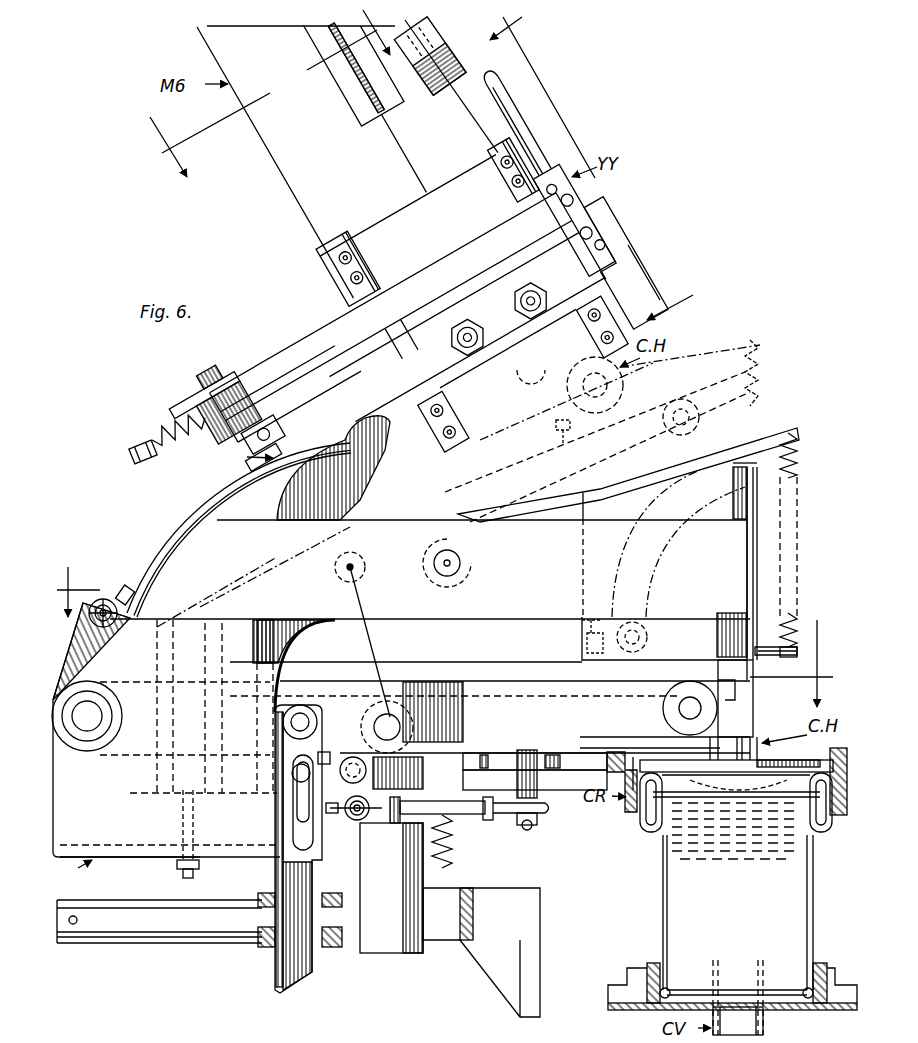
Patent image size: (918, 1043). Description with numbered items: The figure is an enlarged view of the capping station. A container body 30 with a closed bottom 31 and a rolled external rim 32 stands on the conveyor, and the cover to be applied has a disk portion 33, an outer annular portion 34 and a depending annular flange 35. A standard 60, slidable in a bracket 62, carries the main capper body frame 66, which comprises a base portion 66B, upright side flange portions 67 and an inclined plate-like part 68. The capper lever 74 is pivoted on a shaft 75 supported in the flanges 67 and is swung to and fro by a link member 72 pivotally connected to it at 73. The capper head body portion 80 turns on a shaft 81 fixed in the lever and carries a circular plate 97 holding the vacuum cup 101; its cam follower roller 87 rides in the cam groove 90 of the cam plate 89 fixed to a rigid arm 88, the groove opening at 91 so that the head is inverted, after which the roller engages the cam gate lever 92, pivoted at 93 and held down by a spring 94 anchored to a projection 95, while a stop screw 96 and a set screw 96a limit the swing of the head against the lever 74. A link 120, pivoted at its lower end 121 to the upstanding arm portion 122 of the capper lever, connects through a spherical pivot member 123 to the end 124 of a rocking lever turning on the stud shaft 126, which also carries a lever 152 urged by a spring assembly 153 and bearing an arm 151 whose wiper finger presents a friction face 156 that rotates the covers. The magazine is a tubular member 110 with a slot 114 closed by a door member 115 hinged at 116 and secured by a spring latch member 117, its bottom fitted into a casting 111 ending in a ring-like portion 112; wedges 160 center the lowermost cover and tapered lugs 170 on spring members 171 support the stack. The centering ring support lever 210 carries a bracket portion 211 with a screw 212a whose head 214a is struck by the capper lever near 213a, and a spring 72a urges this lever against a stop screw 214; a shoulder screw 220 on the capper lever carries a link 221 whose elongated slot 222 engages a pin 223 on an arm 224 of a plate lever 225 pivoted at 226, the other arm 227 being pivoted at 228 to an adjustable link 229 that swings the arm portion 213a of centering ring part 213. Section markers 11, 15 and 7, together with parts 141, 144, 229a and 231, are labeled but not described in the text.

The tubular member 110 is at (300, 207).
The hinge 116 is at (367, 103).
The door member 115 is at (430, 132).
The spring latch member 117 is at (466, 70).
The section line 15- 15 is at (596, 164).
The section line 11- 11 is at (279, 106).
The inner face portion 156 is at (507, 117).
The slot 114 is at (488, 137).
The casting 111 is at (326, 272).
The spring member 171 is at (517, 199).
The lever 152 is at (460, 289).
The bar 141 is at (464, 320).
The nuts 144 is at (514, 325).
The tapered lugs 170 is at (592, 345).
The arm 151 is at (557, 220).
The ring-like portion 112 is at (622, 277).
The wedges 160 is at (525, 368).
The stop screw 96 is at (549, 437).
The set screw 96a is at (717, 354).
The stud shaft 126 is at (200, 383).
The lever end 124 is at (263, 423).
The spherical pivot member 123 is at (230, 468).
The spring assembly 153 is at (152, 440).
The inclined plate-like part 68 is at (340, 433).
The link 120 is at (182, 515).
The cam gate lever 92 is at (627, 480).
The groove opening 91 is at (733, 462).
The cam plate 89 is at (758, 494).
The spring 94 is at (795, 611).
The projection 95 is at (765, 645).
The rigid arm 88 is at (556, 552).
The cam groove 90 is at (657, 543).
The pivot 93 is at (461, 564).
The cam follower roller 87 is at (647, 623).
The screw 212a is at (262, 585).
The screw head 214a is at (289, 625).
The bracket portion 211 is at (228, 600).
The section line 7- 7 is at (449, 624).
The lower end pivot 121 is at (106, 600).
The upstanding arm portion 122 is at (82, 650).
The shaft 75 is at (87, 720).
The upright side flange portions 67 is at (134, 822).
The main capper body frame 66 is at (73, 874).
The base portion 66B is at (136, 858).
The stop screw 214 is at (184, 817).
The standard 60 is at (275, 965).
The elongated slot 222 is at (280, 850).
The shoulder screw 220 is at (305, 705).
The pin 223 is at (292, 773).
The plate lever 225 is at (318, 812).
The link 221 is at (336, 815).
The arm 227 is at (365, 822).
The pivot 228 is at (405, 870).
The adjustable link 229 is at (486, 820).
The nut 229a is at (530, 826).
The link member 72 is at (406, 950).
The spring 72a is at (450, 860).
The bracket 62 is at (480, 932).
The pivot 226 is at (367, 768).
The arm 224 is at (322, 757).
The pivotal connection 73 is at (390, 720).
The capper lever 74 is at (493, 680).
The arm portion 213a is at (288, 708).
The centering ring part 213 is at (563, 752).
The centering ring support lever 210 is at (557, 778).
The pin 231 is at (632, 757).
The outer annular portion 34 is at (622, 800).
The annular flange 35 is at (640, 812).
The annular external rim 32 is at (657, 832).
The container body 30 is at (662, 913).
The disk portion 33 is at (722, 812).
The vacuum cup 101 is at (747, 812).
The closed bottom 31 is at (730, 987).
The capper head body portion 80 is at (722, 703).
The shaft 81 is at (686, 709).
The circular plate 97 is at (836, 750).